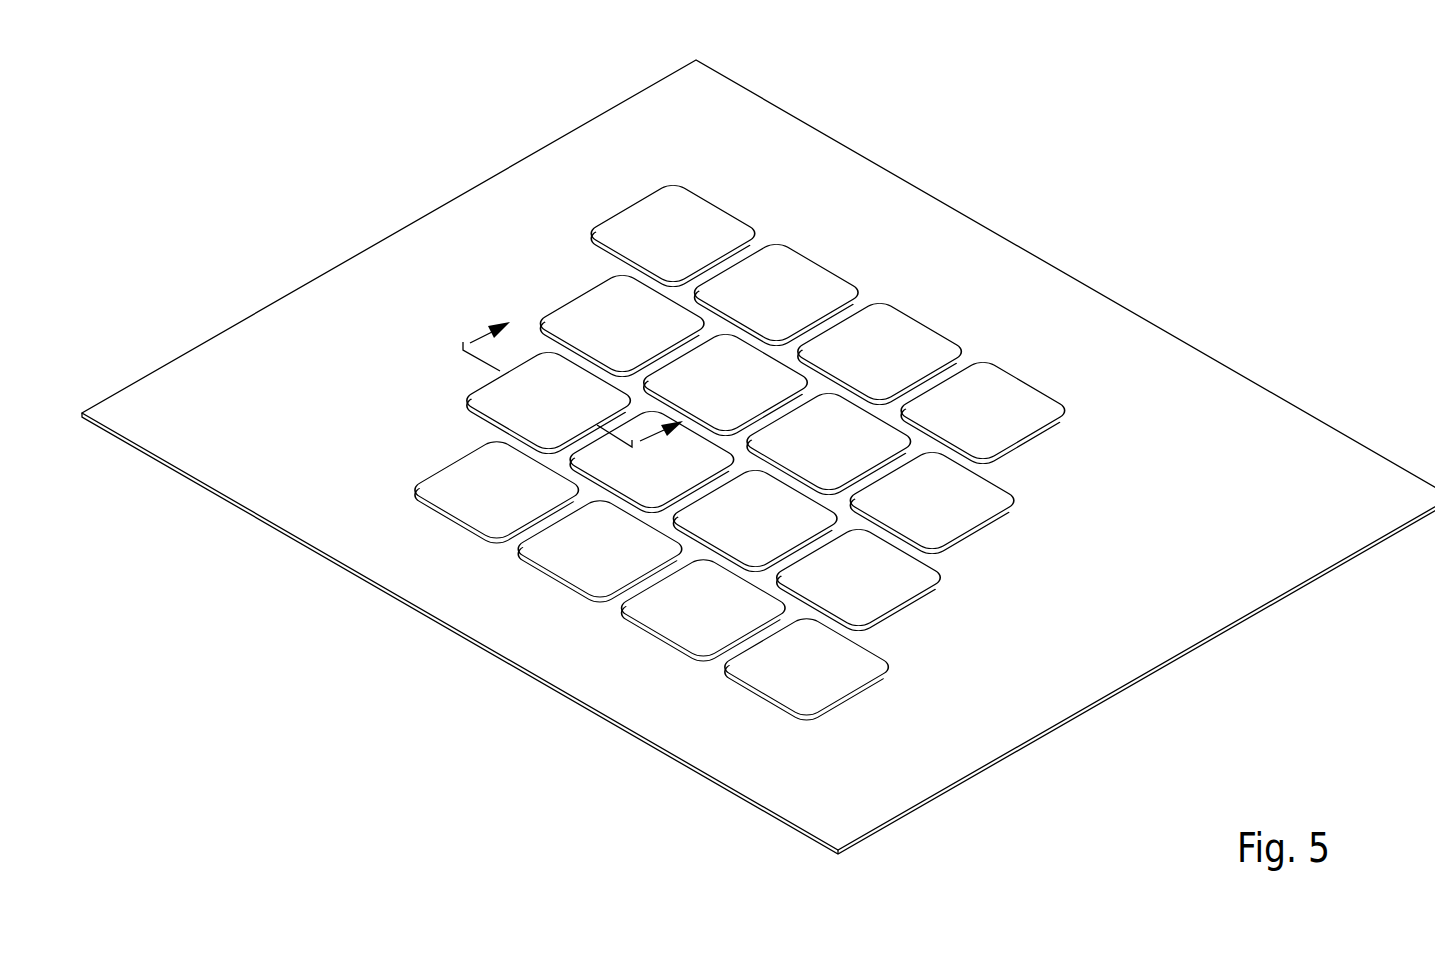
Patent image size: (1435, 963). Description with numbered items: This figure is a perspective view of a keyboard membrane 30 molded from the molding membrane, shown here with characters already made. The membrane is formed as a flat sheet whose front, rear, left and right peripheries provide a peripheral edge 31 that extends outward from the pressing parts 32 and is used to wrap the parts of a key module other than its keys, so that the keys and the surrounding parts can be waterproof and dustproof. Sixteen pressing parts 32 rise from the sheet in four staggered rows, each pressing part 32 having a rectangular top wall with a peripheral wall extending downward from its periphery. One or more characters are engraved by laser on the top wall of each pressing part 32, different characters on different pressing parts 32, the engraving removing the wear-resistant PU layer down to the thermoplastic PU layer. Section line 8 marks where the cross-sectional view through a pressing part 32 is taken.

The keyboard membrane 30 is at (1070, 243).
The peripheral edge 31 is at (1215, 390).
The pressing part 32 is at (845, 407).
The section line 8- 8 is at (569, 379).